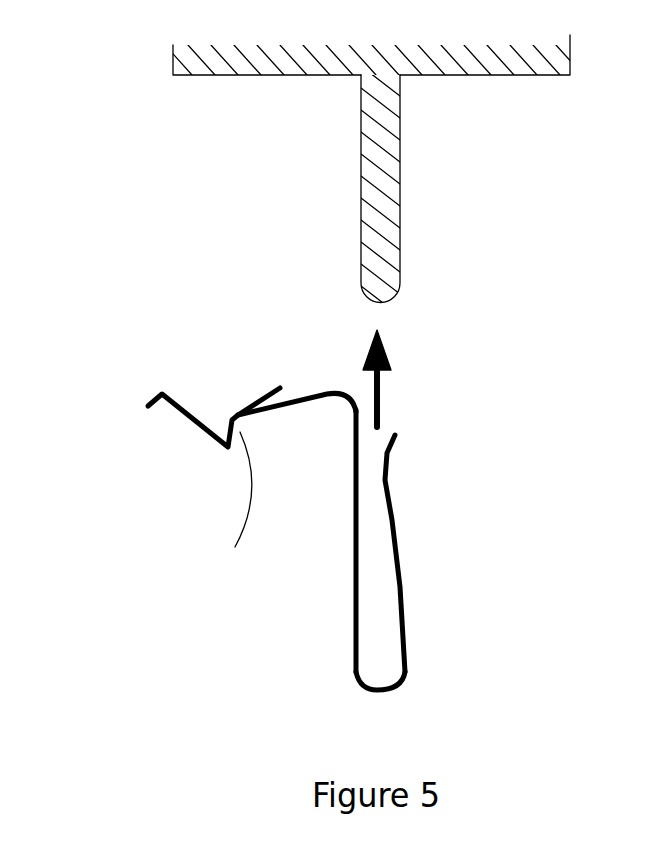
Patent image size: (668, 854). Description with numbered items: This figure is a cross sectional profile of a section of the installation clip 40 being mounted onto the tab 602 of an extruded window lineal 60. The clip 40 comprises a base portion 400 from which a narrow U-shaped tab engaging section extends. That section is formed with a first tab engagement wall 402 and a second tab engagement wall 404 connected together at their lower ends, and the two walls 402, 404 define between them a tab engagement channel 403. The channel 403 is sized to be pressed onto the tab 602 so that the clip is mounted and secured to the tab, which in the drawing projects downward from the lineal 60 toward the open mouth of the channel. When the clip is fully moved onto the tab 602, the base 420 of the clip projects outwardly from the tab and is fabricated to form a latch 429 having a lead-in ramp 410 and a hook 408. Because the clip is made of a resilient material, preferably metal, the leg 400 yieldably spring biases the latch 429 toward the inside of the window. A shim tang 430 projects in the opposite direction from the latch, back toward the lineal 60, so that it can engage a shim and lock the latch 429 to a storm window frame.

The clip 40 is at (457, 337).
The extruded lineal 60 is at (516, 93).
The tab 602 is at (361, 160).
The base portion 400 is at (287, 407).
The first tab engagement wall 402 is at (352, 565).
The tab engagement channel 403 is at (377, 640).
The second tab engagement wall 404 is at (400, 572).
The hook 408 is at (217, 512).
The lead-in ramp 410 is at (190, 420).
The base 420 is at (237, 382).
The latch 429 is at (195, 452).
The shim tang 430 is at (255, 398).